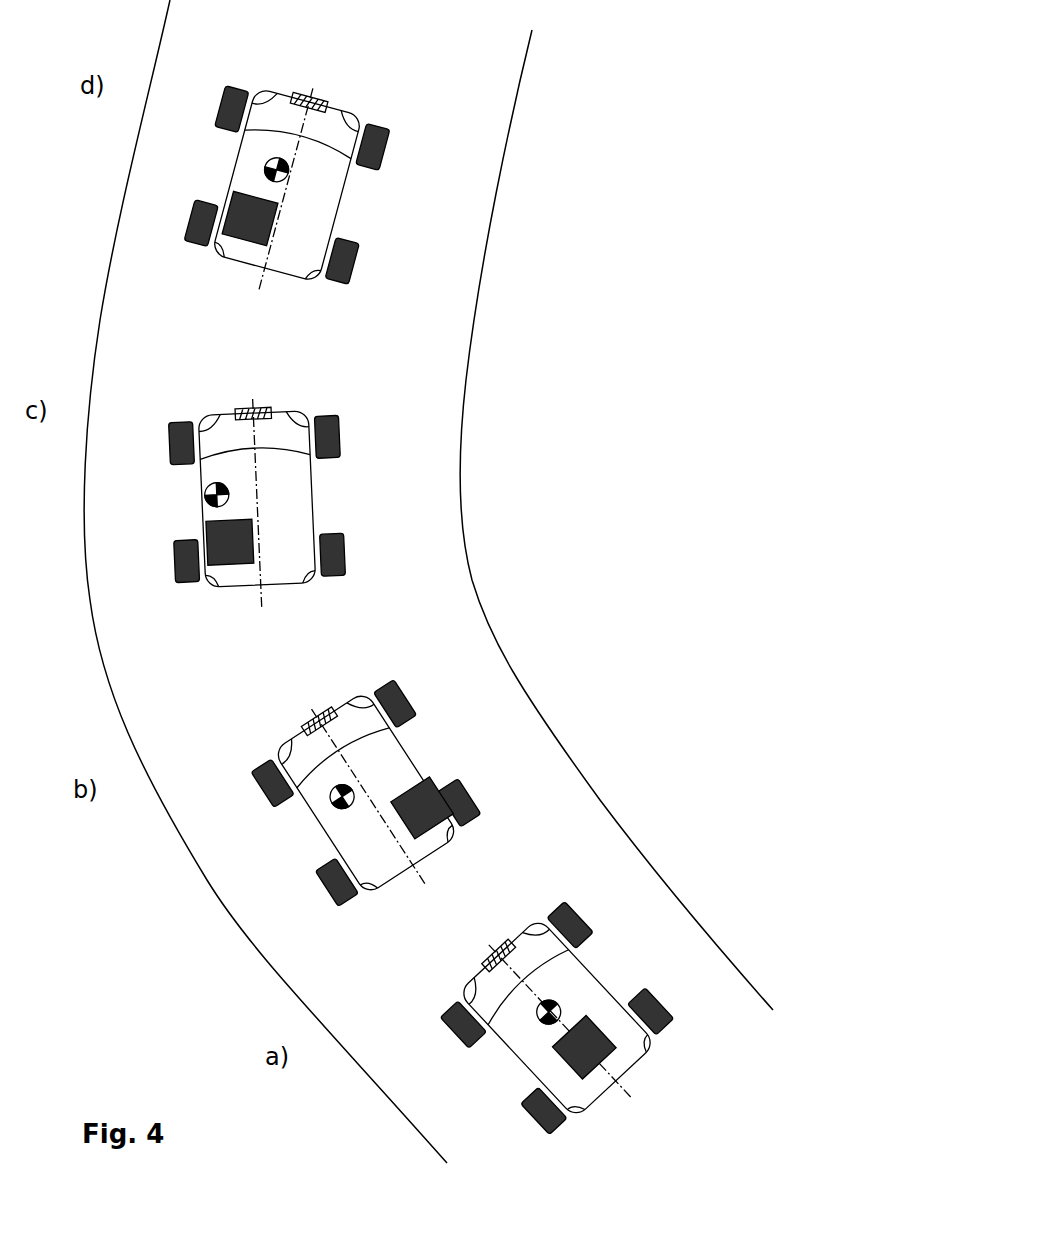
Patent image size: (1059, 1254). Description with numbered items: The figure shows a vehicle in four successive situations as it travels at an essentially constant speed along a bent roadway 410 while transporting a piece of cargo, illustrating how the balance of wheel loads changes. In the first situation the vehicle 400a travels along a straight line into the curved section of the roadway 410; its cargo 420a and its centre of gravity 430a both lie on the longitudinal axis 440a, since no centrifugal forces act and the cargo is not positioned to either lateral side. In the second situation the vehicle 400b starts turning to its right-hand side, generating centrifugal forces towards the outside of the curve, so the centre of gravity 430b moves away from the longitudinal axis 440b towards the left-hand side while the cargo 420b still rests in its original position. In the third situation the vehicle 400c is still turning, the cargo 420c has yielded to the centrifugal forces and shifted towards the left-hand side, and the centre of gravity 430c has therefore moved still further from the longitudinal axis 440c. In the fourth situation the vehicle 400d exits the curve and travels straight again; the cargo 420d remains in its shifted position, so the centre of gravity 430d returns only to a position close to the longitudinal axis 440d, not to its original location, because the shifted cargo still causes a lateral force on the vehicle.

The vehicle 400a is at (612, 958).
The vehicle 400b is at (452, 752).
The vehicle 400c is at (389, 510).
The vehicle 400d is at (422, 205).
The roadway 410 is at (110, 672).
The cargo 420a is at (598, 1024).
The cargo 420b is at (408, 815).
The cargo 420c is at (250, 542).
The cargo 420d is at (272, 212).
The centre of gravity 430a is at (560, 1005).
The centre of gravity 430b is at (355, 792).
The centre of gravity 430c is at (232, 494).
The centre of gravity 430d is at (290, 172).
The longitudinal axis 440a is at (631, 1097).
The longitudinal axis 440b is at (262, 607).
The longitudinal axis 440c is at (425, 884).
The longitudinal axis 440d is at (259, 289).